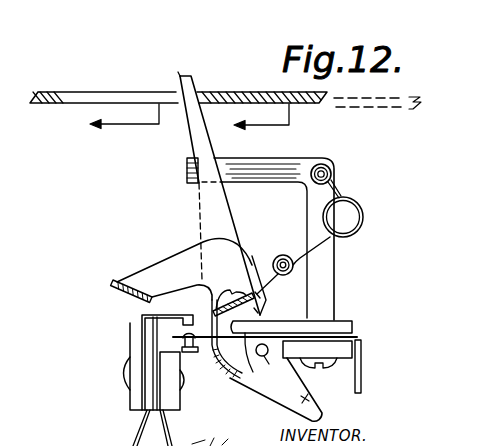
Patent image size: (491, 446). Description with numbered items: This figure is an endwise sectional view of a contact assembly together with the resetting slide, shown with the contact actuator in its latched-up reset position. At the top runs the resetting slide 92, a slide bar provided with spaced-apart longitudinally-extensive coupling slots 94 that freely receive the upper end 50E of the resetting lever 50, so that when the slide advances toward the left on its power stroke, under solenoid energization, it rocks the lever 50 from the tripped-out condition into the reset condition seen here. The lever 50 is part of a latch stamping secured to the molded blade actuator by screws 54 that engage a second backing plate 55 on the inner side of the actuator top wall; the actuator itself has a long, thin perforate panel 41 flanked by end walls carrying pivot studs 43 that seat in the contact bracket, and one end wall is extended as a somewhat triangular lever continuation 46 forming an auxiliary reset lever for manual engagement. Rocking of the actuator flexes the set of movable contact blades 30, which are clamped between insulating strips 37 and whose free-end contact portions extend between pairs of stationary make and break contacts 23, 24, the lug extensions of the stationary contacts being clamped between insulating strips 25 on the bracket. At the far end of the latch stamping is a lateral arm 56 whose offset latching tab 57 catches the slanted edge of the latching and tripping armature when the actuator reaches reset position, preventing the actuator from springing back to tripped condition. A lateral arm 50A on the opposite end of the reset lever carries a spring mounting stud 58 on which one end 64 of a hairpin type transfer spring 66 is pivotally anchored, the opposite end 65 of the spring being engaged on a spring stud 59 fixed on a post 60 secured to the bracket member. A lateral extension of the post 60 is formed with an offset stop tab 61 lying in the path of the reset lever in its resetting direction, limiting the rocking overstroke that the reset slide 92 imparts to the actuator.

The coupling slots 94 is at (90, 101).
The resetting slide 92 is at (240, 97).
The resetting lever 50 is at (208, 191).
The end of resetting lever 50E is at (183, 78).
The lateral arm 50A is at (252, 266).
The post 60 is at (335, 266).
The stop tab 61 is at (187, 169).
The spring stud 59 is at (335, 170).
The end of transfer spring 65 is at (335, 181).
The transfer spring 66 is at (364, 219).
The end of transfer spring 64 is at (291, 256).
The lateral arm 56 is at (186, 280).
The latching tab 57 is at (113, 291).
The screws 54 is at (232, 289).
The spring mounting stud 58 is at (262, 306).
The second backing plate 55 is at (258, 314).
The insulating strips 37 is at (352, 345).
The insulating strips 25 is at (155, 337).
The lever continuation 46 is at (306, 398).
The pivot studs 43 is at (276, 369).
The movable contact blades 30 is at (260, 365).
The perforate panel 41 is at (220, 371).
The stationary contact 24 is at (193, 353).
The stationary contact 23 is at (190, 318).